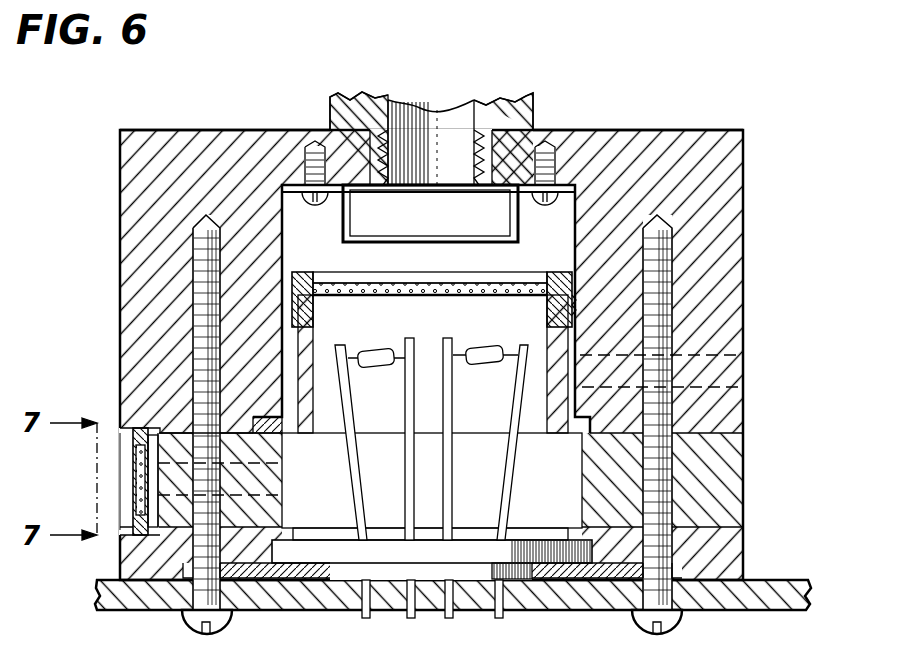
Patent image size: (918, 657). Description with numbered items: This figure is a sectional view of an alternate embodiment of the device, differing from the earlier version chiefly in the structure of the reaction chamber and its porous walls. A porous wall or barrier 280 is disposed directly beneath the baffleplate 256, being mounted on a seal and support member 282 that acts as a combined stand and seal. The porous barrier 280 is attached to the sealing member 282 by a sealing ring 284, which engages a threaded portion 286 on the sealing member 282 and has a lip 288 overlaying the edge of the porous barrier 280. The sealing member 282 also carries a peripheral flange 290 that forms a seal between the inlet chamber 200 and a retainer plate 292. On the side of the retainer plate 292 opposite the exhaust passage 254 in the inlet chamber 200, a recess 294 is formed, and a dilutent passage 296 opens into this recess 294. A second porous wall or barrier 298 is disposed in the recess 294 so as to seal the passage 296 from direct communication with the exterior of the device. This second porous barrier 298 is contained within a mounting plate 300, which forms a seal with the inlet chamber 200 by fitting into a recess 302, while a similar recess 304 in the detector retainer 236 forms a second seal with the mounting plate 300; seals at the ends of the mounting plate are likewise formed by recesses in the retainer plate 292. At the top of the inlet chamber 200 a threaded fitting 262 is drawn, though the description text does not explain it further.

The inlet chamber 200 is at (742, 226).
The detector retainer 236 is at (745, 547).
The exhaust passage 254 is at (743, 363).
The baffleplate 256 is at (468, 234).
The threaded stud and nut 262 is at (533, 100).
The porous wall or barrier 280 is at (520, 273).
The seal and support member 282 is at (543, 310).
The sealing ring 284 is at (303, 273).
The threaded portion 286 is at (303, 273).
The lip 288 is at (313, 300).
The peripheral flange 290 is at (268, 422).
The retainer plate 292 is at (745, 462).
The recess 294 is at (118, 448).
The dilutent passage 296 is at (160, 478).
The second porous wall or barrier 298 is at (133, 475).
The mounting plate 300 is at (133, 428).
The recess 302 is at (150, 430).
The recess 304 is at (135, 535).